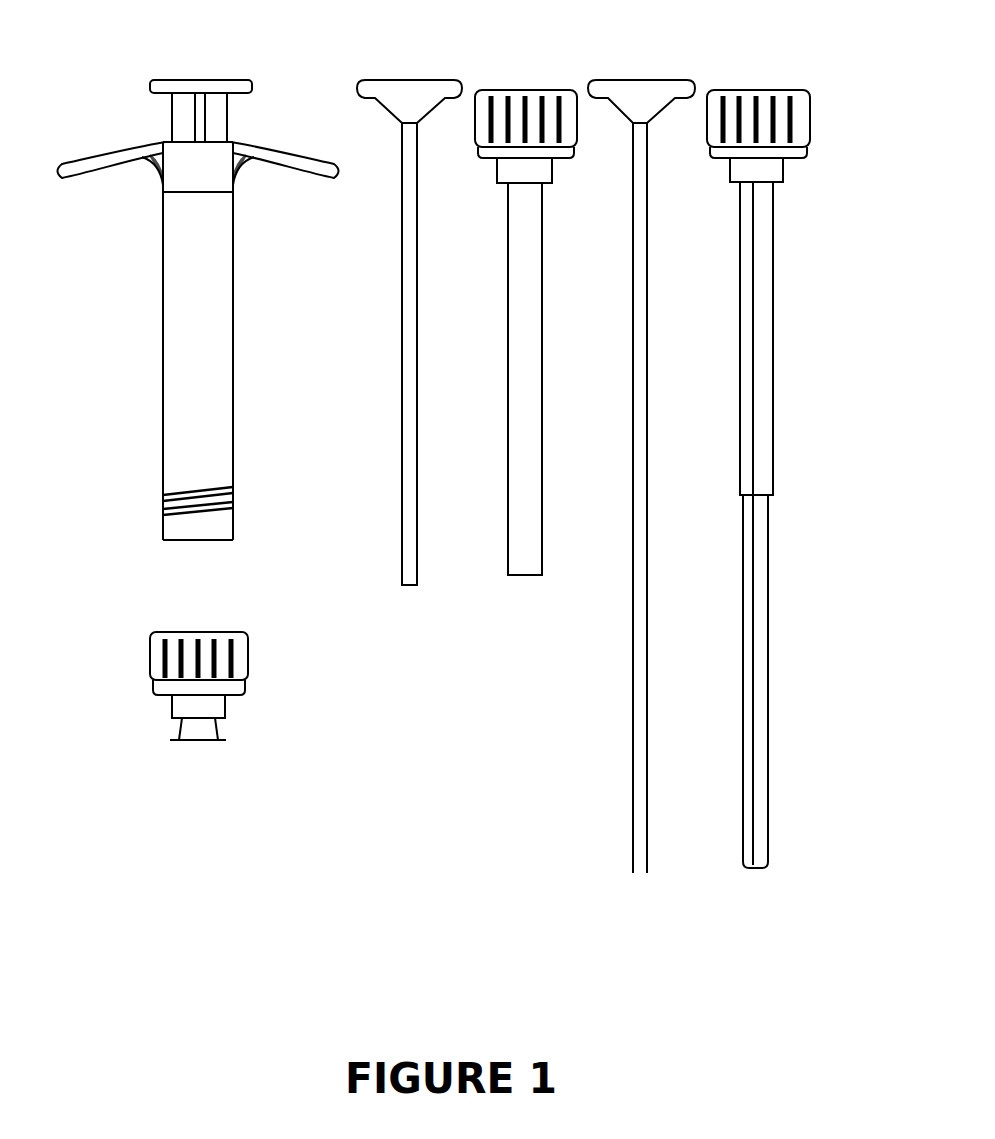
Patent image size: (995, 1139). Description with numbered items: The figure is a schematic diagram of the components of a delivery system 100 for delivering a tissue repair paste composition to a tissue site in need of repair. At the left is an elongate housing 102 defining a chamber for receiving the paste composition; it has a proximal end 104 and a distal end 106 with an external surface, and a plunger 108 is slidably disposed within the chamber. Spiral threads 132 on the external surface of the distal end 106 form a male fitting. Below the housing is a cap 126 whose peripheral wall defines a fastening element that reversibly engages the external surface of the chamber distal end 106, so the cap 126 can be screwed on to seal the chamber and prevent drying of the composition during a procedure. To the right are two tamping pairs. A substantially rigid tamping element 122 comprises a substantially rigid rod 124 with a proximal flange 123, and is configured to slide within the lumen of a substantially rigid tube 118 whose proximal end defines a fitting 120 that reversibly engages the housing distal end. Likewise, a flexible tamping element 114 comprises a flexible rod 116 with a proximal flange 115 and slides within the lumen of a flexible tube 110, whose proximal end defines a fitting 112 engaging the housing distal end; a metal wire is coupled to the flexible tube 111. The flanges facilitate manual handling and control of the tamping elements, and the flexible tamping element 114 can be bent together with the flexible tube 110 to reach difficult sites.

The delivery system 100 is at (398, 816).
The elongate housing 102 is at (157, 313).
The proximal end 104 is at (135, 130).
The distal end 106 is at (157, 555).
The plunger 108 is at (218, 70).
The flexible tube 110 is at (790, 468).
The flexible tube 111 is at (753, 607).
The fitting 112 is at (808, 103).
The flexible tamping element 114 is at (586, 443).
The flange 115 is at (630, 82).
The flexible rod 116 is at (647, 682).
The substantially rigid tube 118 is at (546, 297).
The fitting 120 is at (545, 97).
The substantially rigid tamping element 122 is at (374, 299).
The flange 123 is at (393, 80).
The substantially rigid rod 124 is at (413, 302).
The cap 126 is at (220, 690).
The spiral threads 132 is at (163, 495).